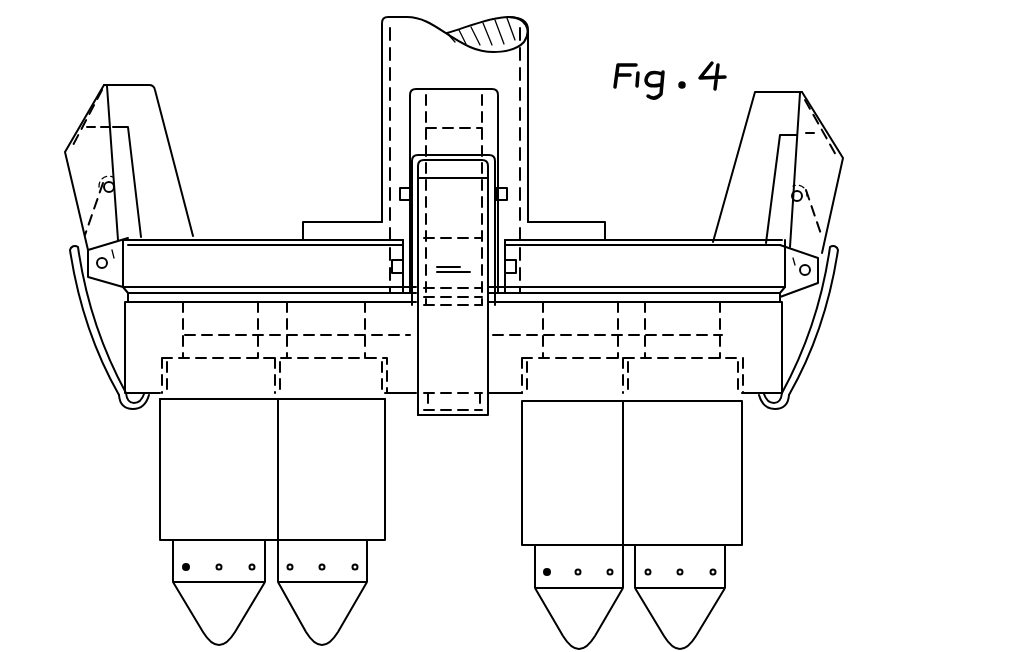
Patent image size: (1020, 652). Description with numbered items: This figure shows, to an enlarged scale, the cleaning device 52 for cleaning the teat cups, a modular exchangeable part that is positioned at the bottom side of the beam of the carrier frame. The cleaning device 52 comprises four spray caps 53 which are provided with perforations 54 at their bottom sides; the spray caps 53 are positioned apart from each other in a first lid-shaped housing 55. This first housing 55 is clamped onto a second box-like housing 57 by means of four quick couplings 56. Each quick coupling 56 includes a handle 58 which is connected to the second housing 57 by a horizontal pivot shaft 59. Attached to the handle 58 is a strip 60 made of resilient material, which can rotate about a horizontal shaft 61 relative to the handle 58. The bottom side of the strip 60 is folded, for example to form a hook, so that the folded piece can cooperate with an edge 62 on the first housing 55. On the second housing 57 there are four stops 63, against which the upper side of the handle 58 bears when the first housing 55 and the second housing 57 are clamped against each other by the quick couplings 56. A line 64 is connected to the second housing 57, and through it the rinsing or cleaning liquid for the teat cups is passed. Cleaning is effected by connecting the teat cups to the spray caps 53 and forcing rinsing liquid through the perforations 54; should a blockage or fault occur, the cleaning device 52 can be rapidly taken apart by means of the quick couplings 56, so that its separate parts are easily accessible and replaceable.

The cleaning device 52 is at (666, 214).
The spray caps 53 is at (168, 502).
The perforations 54 is at (186, 567).
The first lid-shaped housing 55 is at (356, 402).
The quick couplings 56 is at (404, 119).
The second box-like housing 57 is at (257, 237).
The handle 58 is at (84, 168).
The horizontal pivot shaft 59 is at (516, 266).
The strip 60 is at (468, 368).
The horizontal shaft 61 is at (509, 194).
The edge 62 is at (447, 416).
The stops 63 is at (165, 152).
The line 64 is at (398, 72).